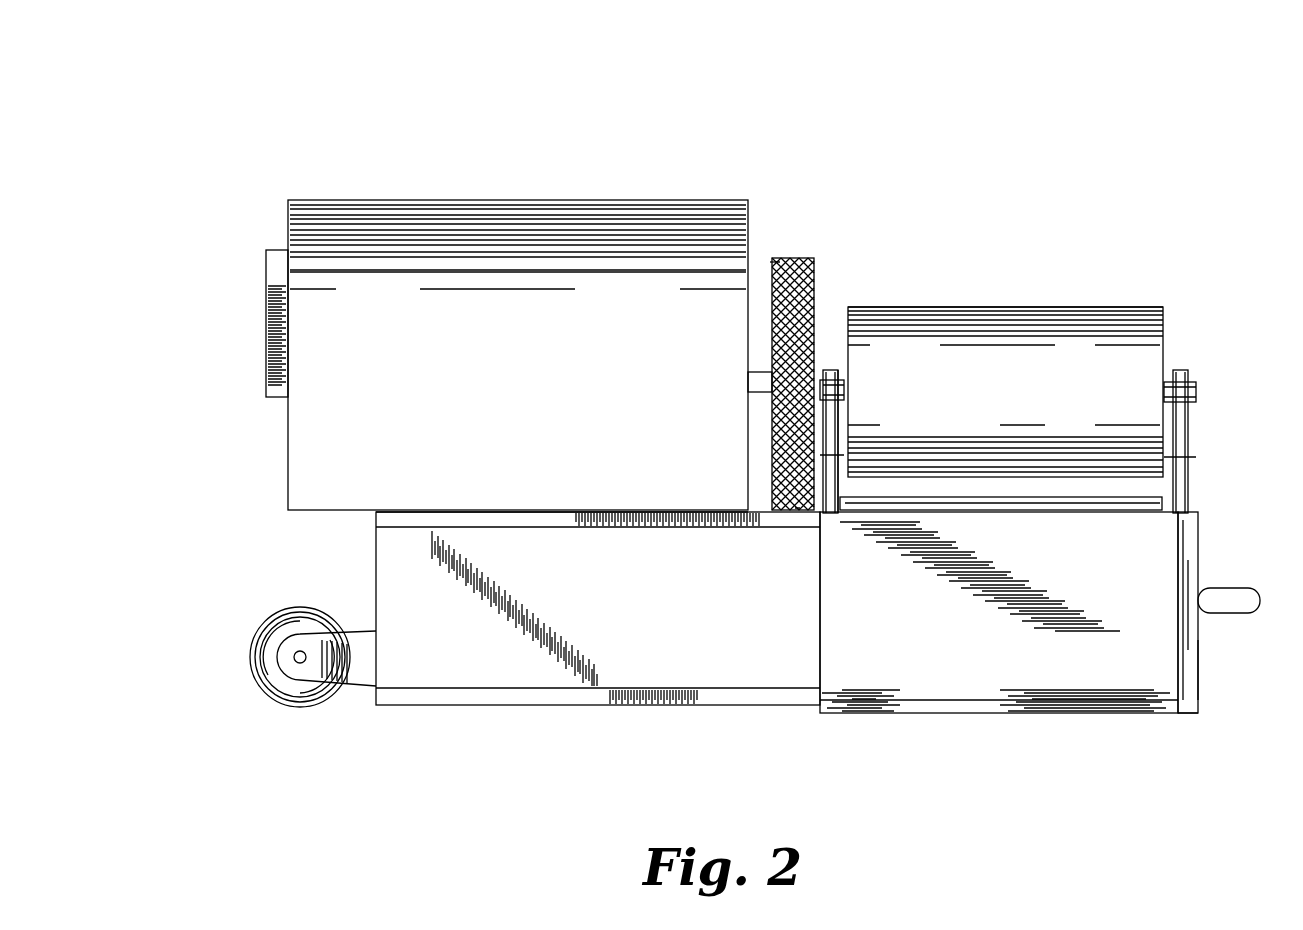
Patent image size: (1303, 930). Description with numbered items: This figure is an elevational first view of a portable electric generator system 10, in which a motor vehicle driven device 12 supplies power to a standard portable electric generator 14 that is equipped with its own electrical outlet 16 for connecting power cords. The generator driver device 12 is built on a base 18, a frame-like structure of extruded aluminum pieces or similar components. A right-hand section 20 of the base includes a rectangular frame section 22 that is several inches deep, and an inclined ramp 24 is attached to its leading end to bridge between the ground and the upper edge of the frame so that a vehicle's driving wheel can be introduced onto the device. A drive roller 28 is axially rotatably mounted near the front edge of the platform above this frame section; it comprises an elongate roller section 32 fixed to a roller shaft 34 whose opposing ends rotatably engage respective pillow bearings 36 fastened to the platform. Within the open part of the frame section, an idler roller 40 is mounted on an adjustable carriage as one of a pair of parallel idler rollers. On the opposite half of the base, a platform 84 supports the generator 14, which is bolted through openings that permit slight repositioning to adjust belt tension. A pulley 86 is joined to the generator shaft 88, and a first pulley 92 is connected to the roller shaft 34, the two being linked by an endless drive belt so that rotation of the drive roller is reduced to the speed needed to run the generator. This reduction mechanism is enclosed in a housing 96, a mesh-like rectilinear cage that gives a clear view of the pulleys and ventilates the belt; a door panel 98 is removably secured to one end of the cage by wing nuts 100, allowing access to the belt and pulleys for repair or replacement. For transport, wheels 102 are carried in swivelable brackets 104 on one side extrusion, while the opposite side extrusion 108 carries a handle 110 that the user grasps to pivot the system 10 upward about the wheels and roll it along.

The portable electric generator system 10 is at (367, 115).
The motor vehicle driven device 12 is at (748, 718).
The portable electric generator 14 is at (626, 204).
The electrical outlet 16 is at (266, 350).
The base 18 is at (578, 703).
The right-hand section 20 is at (1195, 714).
The rectangular frame section 22 is at (1187, 530).
The inclined ramp 24 is at (1025, 688).
The drive roller 28 is at (996, 306).
The roller section 32 is at (1125, 306).
The roller shaft 34 is at (845, 322).
The pillow bearings 36 is at (828, 370).
The idler roller 40 is at (928, 505).
The platform 84 is at (454, 510).
The pulley 86 is at (778, 432).
The generator shaft 88 is at (755, 390).
The first pulley 92 is at (778, 311).
The housing 96 is at (794, 258).
The door panel 98 is at (772, 260).
The wing nuts 100 is at (777, 260).
The wheels 102 is at (270, 696).
The brackets 104 is at (362, 688).
The side extrusion 108 is at (1200, 652).
The handle 110 is at (1235, 588).